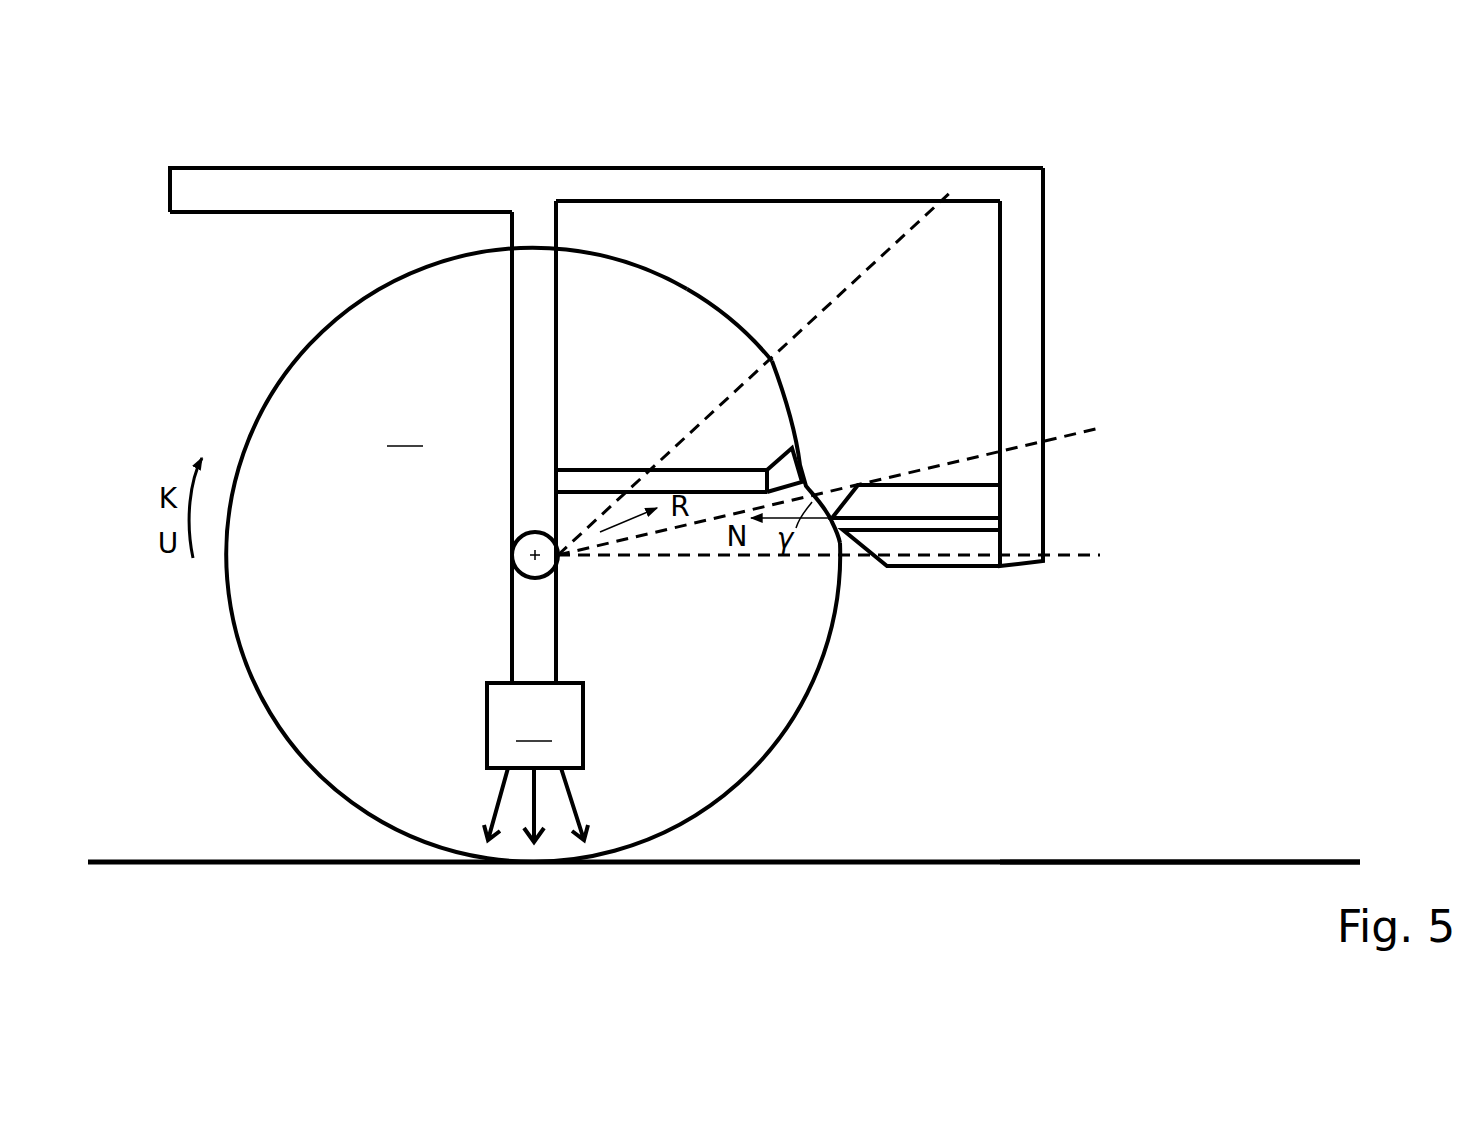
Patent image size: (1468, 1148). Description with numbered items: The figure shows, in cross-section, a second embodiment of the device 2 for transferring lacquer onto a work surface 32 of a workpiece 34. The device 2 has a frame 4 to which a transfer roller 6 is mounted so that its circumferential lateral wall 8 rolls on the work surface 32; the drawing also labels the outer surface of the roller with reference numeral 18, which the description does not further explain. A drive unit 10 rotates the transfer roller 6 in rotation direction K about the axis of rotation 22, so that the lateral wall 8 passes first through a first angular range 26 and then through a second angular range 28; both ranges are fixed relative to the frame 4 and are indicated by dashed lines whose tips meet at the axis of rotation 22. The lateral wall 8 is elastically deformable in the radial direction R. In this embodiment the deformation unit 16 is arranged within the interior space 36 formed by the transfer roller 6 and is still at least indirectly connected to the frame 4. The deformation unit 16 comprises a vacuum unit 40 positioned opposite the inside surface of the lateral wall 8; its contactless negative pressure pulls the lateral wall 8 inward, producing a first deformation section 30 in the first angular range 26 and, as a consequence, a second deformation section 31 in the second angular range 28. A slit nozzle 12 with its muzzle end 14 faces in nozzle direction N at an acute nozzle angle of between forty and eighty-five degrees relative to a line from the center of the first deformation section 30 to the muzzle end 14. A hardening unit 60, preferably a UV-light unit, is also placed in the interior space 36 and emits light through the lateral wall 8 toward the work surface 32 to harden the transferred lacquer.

The device 2 is at (654, 362).
The frame 4 is at (719, 186).
The transfer roller 6 is at (529, 541).
The lateral wall 8 is at (341, 308).
The drive unit 10 is at (526, 590).
The slit nozzle 12 is at (930, 572).
The muzzle end 14 is at (836, 489).
The deformation unit 16 is at (735, 445).
The tire tread surface 18 is at (721, 301).
The axis of rotation 22 is at (529, 562).
The first angular range 26 is at (961, 255).
The second angular range 28 is at (1073, 470).
The first deformation section 30 is at (817, 421).
The second deformation section 31 is at (820, 533).
The work surface 32 is at (724, 807).
The workpiece 34 is at (1155, 852).
The interior space 36 is at (405, 430).
The vacuum unit 40 is at (774, 451).
The hardening unit 60 is at (536, 762).